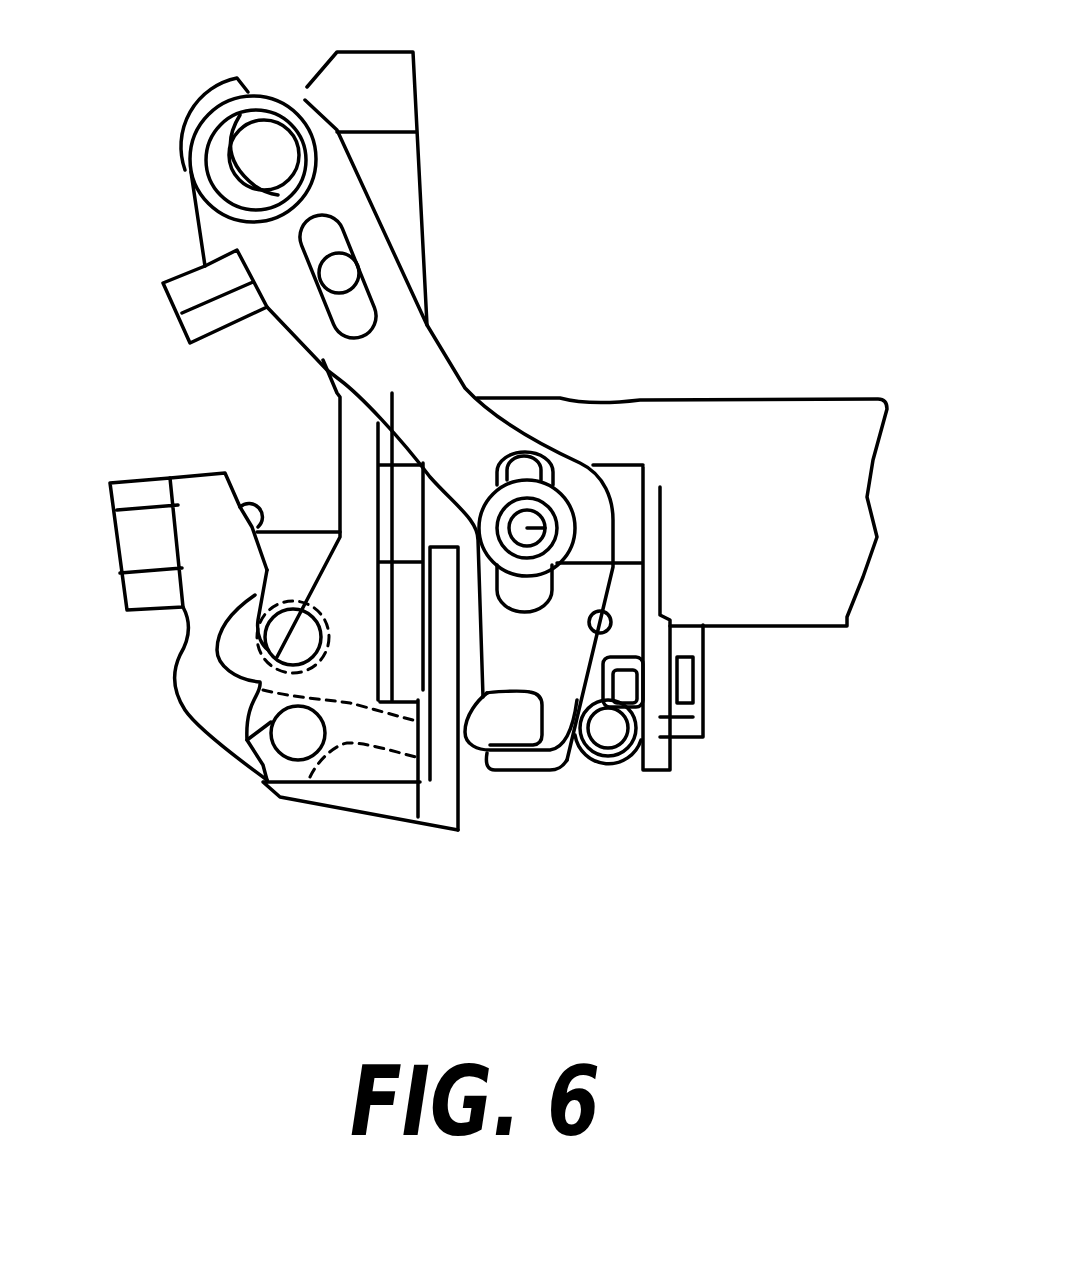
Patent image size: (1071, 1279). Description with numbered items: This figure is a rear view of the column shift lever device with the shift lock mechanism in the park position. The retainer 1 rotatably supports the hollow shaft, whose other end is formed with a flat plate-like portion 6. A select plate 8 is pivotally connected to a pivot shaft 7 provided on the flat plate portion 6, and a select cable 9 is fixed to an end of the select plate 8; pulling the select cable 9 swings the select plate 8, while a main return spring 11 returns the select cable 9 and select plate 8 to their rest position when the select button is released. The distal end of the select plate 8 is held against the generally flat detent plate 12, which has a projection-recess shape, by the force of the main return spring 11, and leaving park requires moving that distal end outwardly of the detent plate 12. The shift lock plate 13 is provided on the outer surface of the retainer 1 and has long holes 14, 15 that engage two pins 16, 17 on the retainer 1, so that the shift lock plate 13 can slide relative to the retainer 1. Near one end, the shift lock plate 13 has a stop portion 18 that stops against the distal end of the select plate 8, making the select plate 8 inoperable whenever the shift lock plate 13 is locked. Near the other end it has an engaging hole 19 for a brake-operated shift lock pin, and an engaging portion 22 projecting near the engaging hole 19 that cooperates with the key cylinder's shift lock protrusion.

The retainer 1 is at (772, 427).
The flat plate-like portion 6 is at (360, 790).
The pivot shaft 7 is at (287, 730).
The select plate 8 is at (190, 643).
The select cable 9 is at (288, 528).
The main return spring 11 is at (265, 645).
The detent plate 12 is at (443, 727).
The shift lock plate 13 is at (440, 370).
The long hole 14 is at (360, 312).
The long hole 15 is at (515, 455).
The pin 16 is at (338, 270).
The pin 17 is at (537, 523).
The stop portion 18 is at (518, 740).
The engaging hole 19 is at (222, 148).
The engaging portion 22 is at (187, 290).